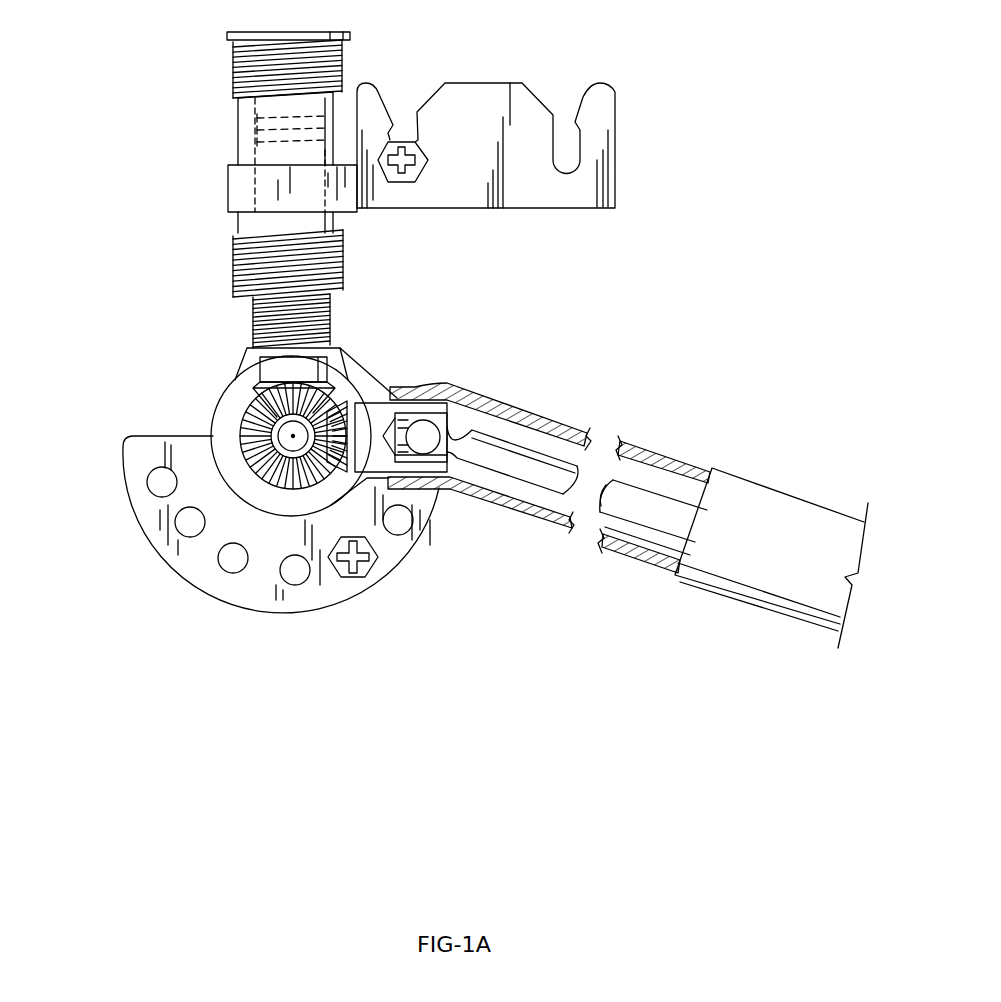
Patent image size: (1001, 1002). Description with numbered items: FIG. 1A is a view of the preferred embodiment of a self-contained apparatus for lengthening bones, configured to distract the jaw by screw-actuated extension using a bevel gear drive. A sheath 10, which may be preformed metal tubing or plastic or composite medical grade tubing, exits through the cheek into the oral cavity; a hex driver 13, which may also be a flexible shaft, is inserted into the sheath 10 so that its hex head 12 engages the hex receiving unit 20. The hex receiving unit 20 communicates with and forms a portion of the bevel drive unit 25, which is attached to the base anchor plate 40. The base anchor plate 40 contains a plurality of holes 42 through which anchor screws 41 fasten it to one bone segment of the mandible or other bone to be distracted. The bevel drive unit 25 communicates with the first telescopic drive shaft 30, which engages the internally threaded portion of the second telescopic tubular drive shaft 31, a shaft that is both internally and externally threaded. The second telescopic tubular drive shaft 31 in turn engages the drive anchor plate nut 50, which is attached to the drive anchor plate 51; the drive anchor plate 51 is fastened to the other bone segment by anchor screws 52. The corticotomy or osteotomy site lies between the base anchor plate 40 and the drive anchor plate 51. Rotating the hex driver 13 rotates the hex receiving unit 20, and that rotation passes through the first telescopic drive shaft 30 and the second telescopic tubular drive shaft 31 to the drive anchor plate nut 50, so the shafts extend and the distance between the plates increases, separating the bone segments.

The sheath 10 is at (553, 420).
The hex head 12 is at (423, 433).
The hex driver 13 is at (777, 513).
The hex receiving unit 20 is at (387, 462).
The bevel drive unit 25 is at (177, 377).
The first telescopic drive shaft 30 is at (255, 317).
The second telescopic tubular drive shaft 31 is at (340, 257).
The base anchor plate 40 is at (125, 475).
The anchor screws 41 is at (368, 568).
The holes 42 is at (188, 525).
The drive anchor plate nut 50 is at (228, 175).
The drive anchor plate 51 is at (570, 208).
The anchor screws 52 is at (397, 142).